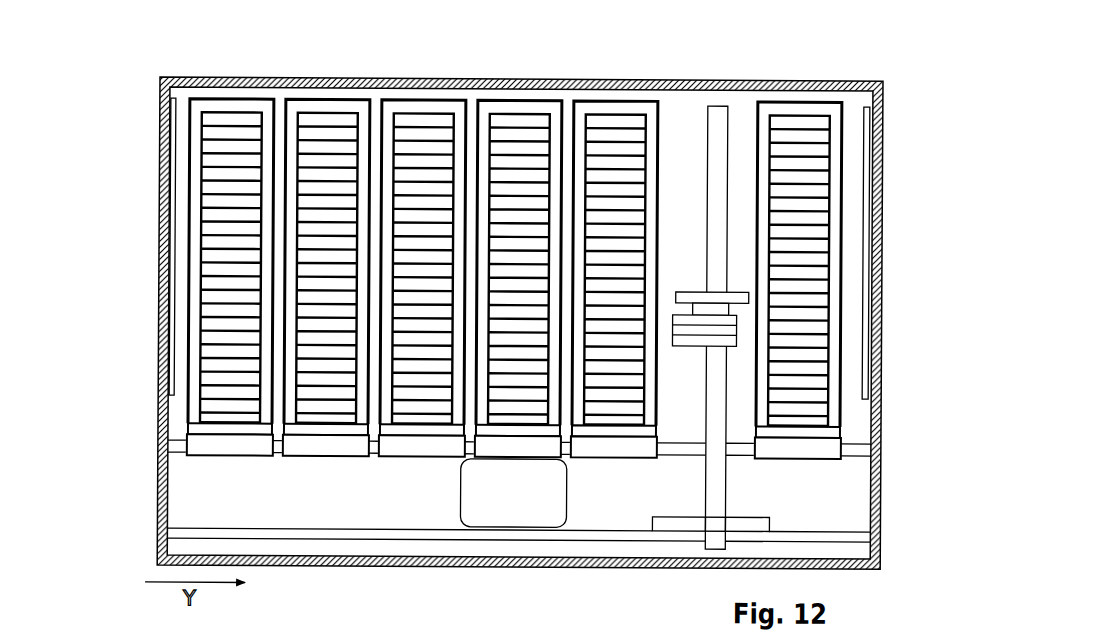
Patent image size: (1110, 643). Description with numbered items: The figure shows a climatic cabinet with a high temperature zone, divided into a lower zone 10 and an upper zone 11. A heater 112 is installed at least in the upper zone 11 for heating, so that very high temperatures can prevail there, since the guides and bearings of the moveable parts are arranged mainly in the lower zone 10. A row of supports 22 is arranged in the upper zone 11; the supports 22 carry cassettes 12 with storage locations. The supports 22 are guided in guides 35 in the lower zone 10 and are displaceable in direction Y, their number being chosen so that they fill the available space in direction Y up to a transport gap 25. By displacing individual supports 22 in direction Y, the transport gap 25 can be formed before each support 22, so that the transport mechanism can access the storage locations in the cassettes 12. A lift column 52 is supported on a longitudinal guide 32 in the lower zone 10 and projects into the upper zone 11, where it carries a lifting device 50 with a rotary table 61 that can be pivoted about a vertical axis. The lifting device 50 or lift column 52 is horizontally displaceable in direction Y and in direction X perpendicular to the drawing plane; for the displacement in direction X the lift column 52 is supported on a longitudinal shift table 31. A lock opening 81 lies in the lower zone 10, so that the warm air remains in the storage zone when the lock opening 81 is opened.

The lower zone 10 is at (478, 323).
The upper zone 11 is at (138, 234).
The cassettes 12 is at (205, 150).
The supports 22 is at (223, 98).
The transport gap 25 is at (688, 107).
The longitudinal shift table 31 is at (682, 525).
The longitudinal guide 32 is at (846, 529).
The guides 35 is at (178, 440).
The lifting device 50 is at (751, 299).
The lift column 52 is at (729, 498).
The rotary table 61 is at (738, 288).
The lock opening 81 is at (482, 525).
The heater 112 is at (172, 349).